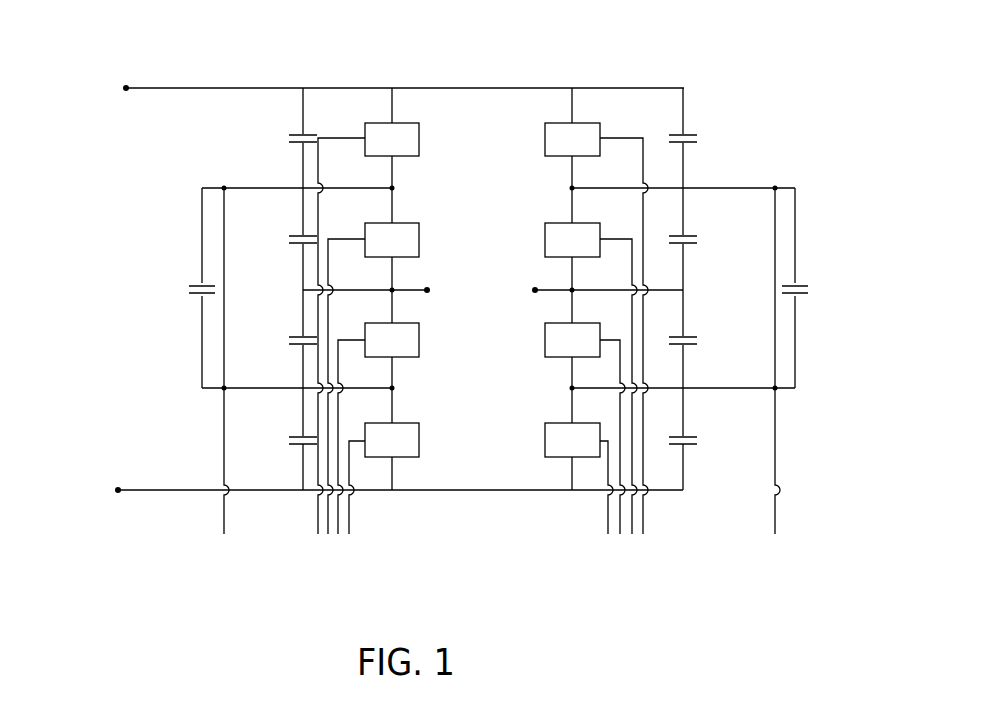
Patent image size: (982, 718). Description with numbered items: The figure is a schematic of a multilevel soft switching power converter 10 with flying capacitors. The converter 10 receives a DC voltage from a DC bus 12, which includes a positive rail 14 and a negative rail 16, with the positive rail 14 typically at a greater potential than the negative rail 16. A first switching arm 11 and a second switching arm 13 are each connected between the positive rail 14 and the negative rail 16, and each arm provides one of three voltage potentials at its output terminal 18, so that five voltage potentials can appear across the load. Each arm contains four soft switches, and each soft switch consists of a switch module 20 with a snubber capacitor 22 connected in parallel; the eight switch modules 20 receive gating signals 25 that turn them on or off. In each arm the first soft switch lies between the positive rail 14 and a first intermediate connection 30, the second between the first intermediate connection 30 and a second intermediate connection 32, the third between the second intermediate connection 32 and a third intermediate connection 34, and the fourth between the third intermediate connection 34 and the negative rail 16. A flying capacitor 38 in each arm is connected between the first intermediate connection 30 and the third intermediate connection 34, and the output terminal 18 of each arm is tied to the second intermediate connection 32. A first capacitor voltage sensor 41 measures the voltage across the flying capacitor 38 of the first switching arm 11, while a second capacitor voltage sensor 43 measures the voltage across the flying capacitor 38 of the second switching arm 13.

The multilevel soft switching power converter 10 is at (457, 292).
The first switching arm 11 is at (218, 62).
The DC bus 12 is at (102, 61).
The second switching arm 13 is at (545, 63).
The positive rail 14 is at (173, 87).
The negative rail 16 is at (152, 488).
The output terminal 18 is at (482, 307).
The switch module 20 is at (420, 138).
The snubber capacitor 22 is at (493, 289).
The gating signal 25 is at (360, 540).
The first intermediate connection 30 is at (394, 189).
The second intermediate connection 32 is at (394, 285).
The third intermediate connection 34 is at (394, 389).
The flying capacitor 38 is at (496, 361).
The first capacitor voltage sensor 41 is at (196, 154).
The second capacitor voltage sensor 43 is at (807, 155).